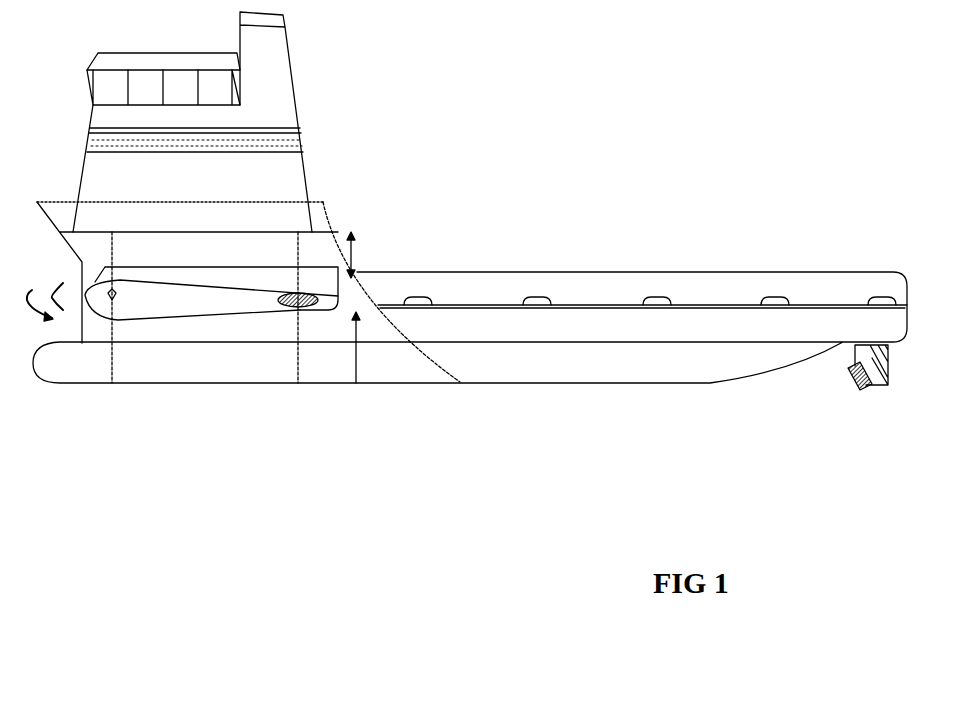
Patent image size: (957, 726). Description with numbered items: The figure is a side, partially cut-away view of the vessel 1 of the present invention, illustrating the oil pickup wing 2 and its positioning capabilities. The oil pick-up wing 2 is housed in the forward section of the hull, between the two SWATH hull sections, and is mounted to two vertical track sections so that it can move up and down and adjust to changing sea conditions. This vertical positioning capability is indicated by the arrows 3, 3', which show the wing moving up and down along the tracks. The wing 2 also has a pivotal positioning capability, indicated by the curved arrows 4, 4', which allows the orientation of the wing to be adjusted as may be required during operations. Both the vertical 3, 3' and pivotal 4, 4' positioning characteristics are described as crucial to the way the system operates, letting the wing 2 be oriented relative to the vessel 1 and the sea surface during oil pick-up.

The vessel 1 is at (555, 352).
The oil pickup wing 2 is at (177, 302).
The vertical positioning capability 3 is at (365, 255).
The vertical positioning capability 3' is at (374, 347).
The pivotal positioning capability 4 is at (52, 279).
The pivotal positioning capability 4' is at (30, 318).